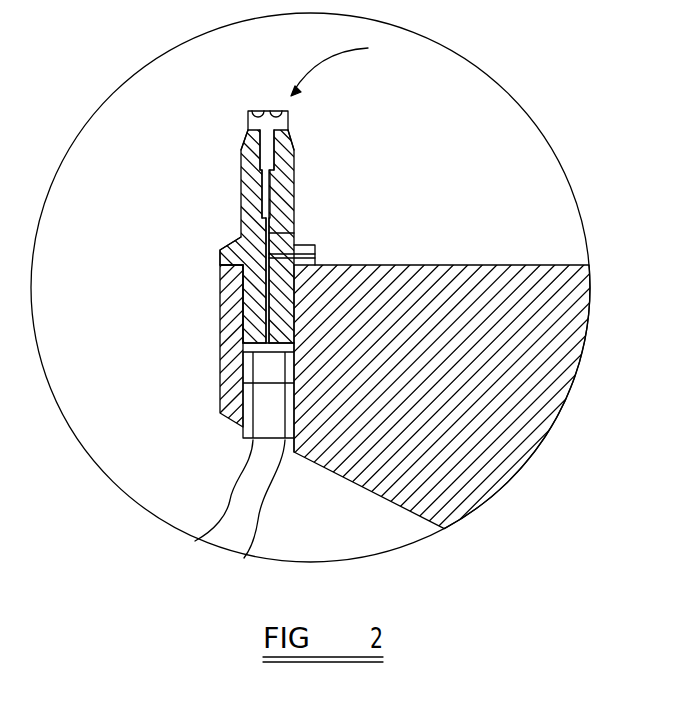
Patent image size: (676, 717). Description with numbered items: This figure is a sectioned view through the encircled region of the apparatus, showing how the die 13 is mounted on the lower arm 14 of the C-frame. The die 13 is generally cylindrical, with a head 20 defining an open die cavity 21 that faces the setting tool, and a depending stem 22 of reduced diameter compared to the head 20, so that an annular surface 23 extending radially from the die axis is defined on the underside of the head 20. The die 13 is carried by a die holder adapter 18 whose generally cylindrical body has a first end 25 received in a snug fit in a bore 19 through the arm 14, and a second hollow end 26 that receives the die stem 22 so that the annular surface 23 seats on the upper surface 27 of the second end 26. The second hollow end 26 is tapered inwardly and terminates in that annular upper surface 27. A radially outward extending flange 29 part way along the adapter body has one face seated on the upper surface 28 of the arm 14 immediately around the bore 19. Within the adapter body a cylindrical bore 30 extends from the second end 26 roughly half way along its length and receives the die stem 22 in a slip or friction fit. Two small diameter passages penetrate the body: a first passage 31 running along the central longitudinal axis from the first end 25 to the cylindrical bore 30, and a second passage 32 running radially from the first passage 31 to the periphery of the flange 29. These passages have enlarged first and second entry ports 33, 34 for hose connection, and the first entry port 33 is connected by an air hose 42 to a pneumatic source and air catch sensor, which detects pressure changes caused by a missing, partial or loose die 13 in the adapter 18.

The die 13 is at (345, 64).
The lower arm 14 is at (510, 306).
The die holder adapter 18 is at (241, 192).
The bore 19 is at (243, 374).
The head 20 is at (248, 114).
The die cavity 21 is at (260, 111).
The stem 22 is at (268, 148).
The annular surface 23 is at (288, 130).
The first end 25 is at (235, 312).
The second hollow end 26 is at (295, 162).
The upper surface 27 is at (246, 131).
The upper surface of the arm 28 is at (220, 260).
The flange 29 is at (220, 249).
The cylindrical bore 30 is at (268, 188).
The first passage 31 is at (295, 233).
The second passage 32 is at (296, 242).
The first entry port 33 is at (250, 343).
The second entry port 34 is at (316, 260).
The air hose 42 is at (247, 498).